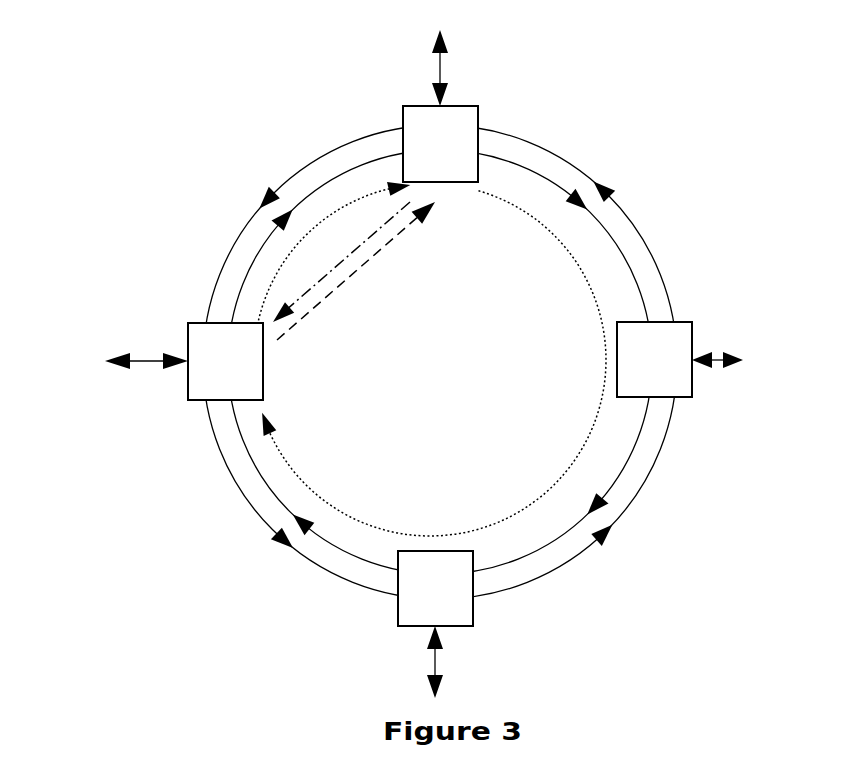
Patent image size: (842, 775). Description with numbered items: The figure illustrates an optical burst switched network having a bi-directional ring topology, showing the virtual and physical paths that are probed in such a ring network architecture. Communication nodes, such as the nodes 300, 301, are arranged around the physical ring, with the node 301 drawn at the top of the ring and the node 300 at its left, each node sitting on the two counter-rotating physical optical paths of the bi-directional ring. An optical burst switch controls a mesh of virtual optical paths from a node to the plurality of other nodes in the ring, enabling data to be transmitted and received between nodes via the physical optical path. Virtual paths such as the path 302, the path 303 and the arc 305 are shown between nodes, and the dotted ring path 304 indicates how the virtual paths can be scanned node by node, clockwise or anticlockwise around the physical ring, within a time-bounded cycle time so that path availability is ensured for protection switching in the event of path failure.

The node 300 is at (188, 347).
The node 301 is at (480, 118).
The dash-dot link 302 is at (377, 232).
The dashed link 303 is at (327, 293).
The dotted ring path 304 is at (573, 462).
The dotted arc segment 305 is at (292, 250).